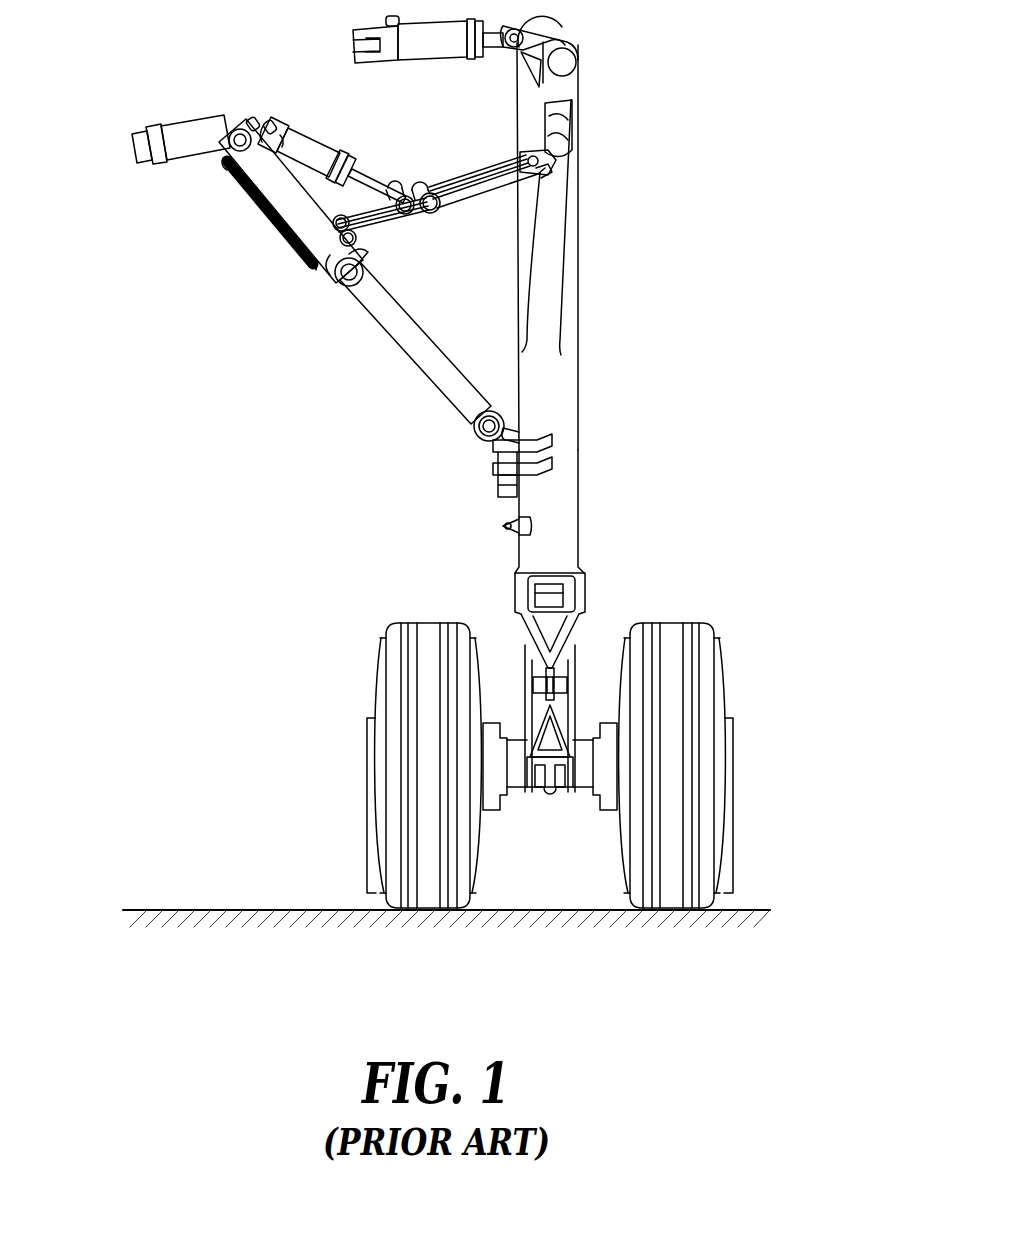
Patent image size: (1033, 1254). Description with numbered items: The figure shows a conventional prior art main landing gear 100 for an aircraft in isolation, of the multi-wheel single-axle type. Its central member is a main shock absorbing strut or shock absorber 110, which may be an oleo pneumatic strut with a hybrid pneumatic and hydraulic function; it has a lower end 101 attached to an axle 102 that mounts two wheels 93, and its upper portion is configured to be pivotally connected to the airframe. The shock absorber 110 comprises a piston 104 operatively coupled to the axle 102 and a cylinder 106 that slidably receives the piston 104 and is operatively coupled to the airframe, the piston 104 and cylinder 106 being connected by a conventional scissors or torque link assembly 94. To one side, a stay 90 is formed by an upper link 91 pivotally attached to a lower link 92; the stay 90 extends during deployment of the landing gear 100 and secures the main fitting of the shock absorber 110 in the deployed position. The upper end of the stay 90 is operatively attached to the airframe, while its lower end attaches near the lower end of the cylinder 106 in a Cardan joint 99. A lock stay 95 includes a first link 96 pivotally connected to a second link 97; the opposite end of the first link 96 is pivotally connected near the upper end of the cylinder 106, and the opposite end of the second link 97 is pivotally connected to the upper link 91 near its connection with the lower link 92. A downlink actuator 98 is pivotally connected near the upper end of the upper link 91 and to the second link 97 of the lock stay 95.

The main landing gear 100 is at (446, 471).
The shock absorber 110 is at (584, 408).
The cylinder 106 is at (574, 513).
The torque link assembly 94 is at (510, 608).
The piston 104 is at (580, 652).
The lower end 101 is at (543, 742).
The axle 102 is at (558, 802).
The wheels 93 is at (394, 627).
The Cardan joint 99 is at (465, 485).
The stay 90 is at (318, 261).
The lower link 92 is at (425, 360).
The upper link 91 is at (292, 200).
The downlink actuator 98 is at (306, 148).
The lock stay 95 is at (443, 168).
The first link 96 is at (473, 190).
The second link 97 is at (403, 220).